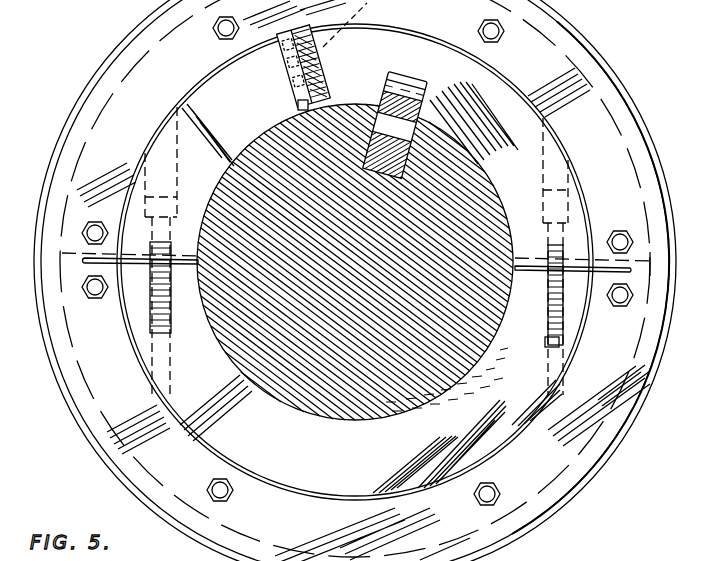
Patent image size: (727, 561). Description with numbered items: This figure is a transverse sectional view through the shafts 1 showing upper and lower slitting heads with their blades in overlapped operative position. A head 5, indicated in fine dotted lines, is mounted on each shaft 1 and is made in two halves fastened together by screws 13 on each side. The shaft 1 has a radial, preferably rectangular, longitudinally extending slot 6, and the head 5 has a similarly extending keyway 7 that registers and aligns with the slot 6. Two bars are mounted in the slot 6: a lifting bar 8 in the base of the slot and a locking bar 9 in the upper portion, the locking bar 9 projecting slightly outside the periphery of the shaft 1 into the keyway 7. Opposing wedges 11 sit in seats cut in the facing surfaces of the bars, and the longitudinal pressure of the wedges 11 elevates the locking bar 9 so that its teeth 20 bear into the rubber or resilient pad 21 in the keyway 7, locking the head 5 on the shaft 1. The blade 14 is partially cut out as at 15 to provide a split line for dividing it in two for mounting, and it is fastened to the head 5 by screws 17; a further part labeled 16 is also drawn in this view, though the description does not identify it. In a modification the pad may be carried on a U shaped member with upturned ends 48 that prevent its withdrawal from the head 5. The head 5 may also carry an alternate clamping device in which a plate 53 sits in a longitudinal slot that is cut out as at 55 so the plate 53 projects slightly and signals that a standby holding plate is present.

The shaft 1 is at (302, 400).
The head 5 is at (177, 363).
The slot 6 is at (404, 164).
The keyway 7 is at (419, 106).
The lifting bar 8 is at (395, 157).
The locking bar 9 is at (417, 117).
The wedges 11 is at (380, 127).
The screws 13 is at (151, 305).
The blade 14 is at (86, 88).
The cut out 15 is at (86, 261).
The inner ring 16 is at (276, 487).
The screws 17 is at (496, 484).
The teeth 20 is at (384, 98).
The resilient pad 21 is at (400, 96).
The upturned ends 48 is at (425, 80).
The plate 53 is at (292, 98).
The cut out 55 is at (296, 105).